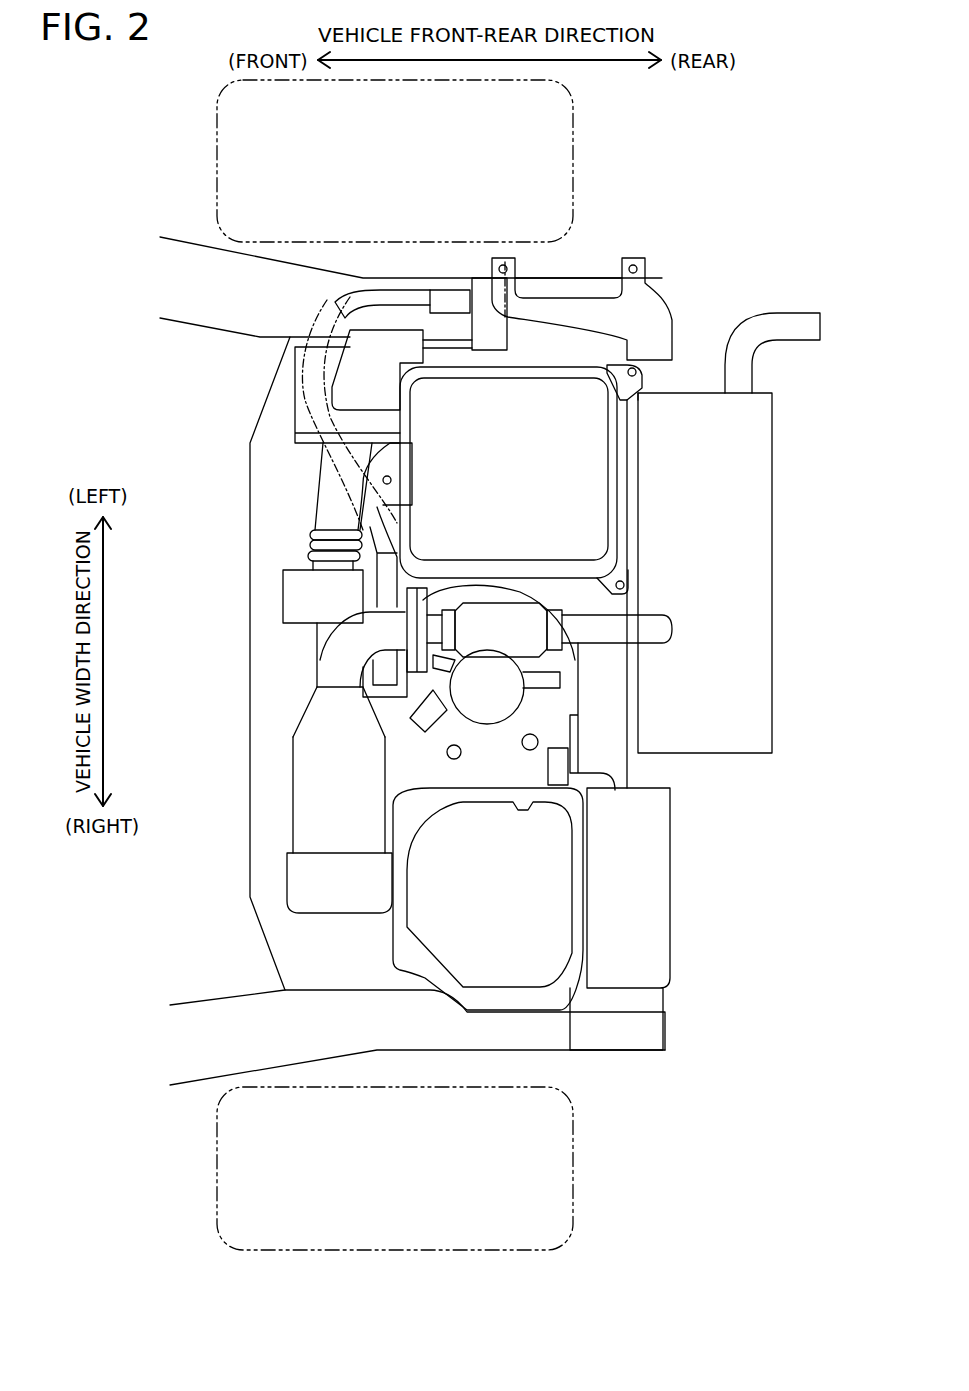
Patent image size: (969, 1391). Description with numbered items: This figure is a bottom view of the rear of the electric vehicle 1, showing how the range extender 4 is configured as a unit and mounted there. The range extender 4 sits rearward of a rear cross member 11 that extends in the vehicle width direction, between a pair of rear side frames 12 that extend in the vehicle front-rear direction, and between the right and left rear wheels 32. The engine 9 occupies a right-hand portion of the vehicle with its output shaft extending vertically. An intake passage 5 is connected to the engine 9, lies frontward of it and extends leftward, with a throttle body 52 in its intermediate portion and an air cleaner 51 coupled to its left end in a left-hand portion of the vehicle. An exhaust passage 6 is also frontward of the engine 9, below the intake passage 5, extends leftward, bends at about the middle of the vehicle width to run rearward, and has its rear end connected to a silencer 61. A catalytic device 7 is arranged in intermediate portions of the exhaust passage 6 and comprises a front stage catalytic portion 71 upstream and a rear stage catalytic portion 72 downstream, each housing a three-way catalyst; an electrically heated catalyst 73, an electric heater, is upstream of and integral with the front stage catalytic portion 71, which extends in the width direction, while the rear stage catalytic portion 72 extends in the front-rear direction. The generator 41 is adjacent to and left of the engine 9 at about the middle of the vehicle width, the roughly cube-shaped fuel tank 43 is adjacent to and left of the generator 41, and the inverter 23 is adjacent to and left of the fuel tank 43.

The electric vehicle 1 is at (700, 206).
The range extender 4 is at (688, 860).
The intake passage 5 is at (300, 535).
The exhaust passage 6 is at (320, 662).
The catalytic device 7 is at (170, 692).
The engine 9 is at (530, 968).
The rear cross member 11 is at (252, 970).
The rear side frame 12 is at (257, 258).
The inverter 23 is at (600, 290).
The rear wheel 32 is at (217, 157).
The generator 41 is at (540, 742).
The fuel tank 43 is at (542, 420).
The air cleaner 51 is at (297, 377).
The throttle body 52 is at (297, 598).
The silencer 61 is at (772, 565).
The front stage catalytic portion 71 is at (313, 776).
The rear stage catalytic portion 72 is at (483, 657).
The electrically heated catalyst 73 is at (290, 877).